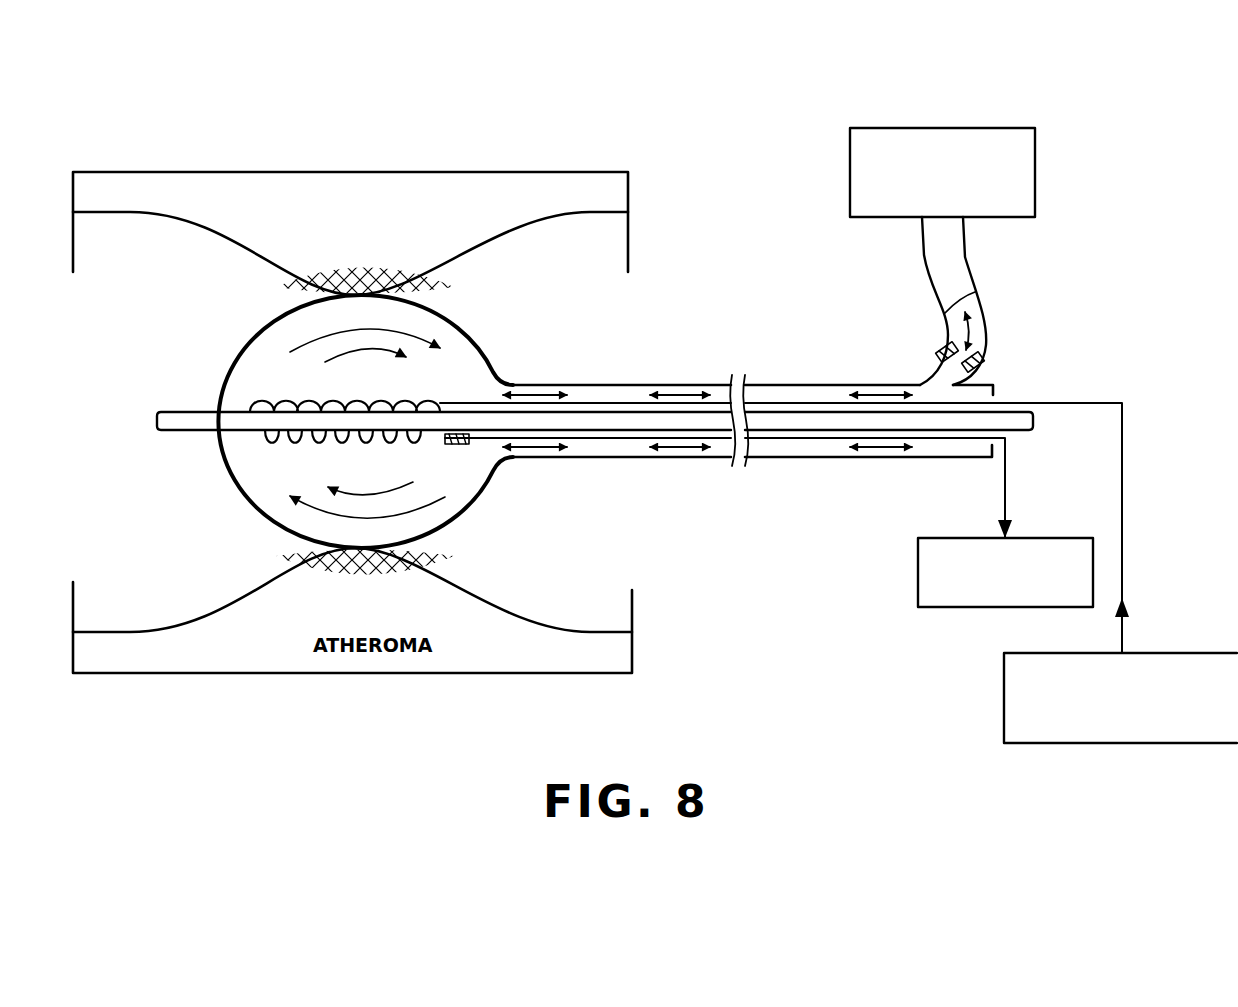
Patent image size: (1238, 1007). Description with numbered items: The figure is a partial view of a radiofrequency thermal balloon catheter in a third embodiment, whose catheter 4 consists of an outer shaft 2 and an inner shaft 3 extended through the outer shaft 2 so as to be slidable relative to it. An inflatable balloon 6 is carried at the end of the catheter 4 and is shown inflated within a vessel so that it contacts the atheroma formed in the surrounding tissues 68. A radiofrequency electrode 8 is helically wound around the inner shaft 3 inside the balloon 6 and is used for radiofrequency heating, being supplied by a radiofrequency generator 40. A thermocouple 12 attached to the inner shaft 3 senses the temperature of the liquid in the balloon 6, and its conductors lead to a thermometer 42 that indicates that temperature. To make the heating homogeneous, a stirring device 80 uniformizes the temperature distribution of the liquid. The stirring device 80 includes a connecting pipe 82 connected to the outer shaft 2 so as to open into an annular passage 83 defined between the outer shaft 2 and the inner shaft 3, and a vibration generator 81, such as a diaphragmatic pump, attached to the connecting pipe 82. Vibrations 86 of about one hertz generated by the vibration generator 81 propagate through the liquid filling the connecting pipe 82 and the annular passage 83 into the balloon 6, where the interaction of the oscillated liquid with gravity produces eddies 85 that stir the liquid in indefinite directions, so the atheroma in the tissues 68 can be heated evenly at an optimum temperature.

The outer shaft 2 is at (768, 460).
The inner shaft 3 is at (810, 420).
The catheter 4 is at (784, 487).
The balloon 6 is at (225, 465).
The radiofrequency electrode 8 is at (341, 440).
The thermocouple 12 is at (467, 446).
The radiofrequency generator 40 is at (1003, 704).
The thermometer 42 is at (950, 609).
The tissues 68 is at (305, 278).
The stirring device 80 is at (824, 328).
The vibration generator 81 is at (946, 126).
The connecting pipe 82 is at (925, 270).
The annular passage 83 is at (594, 393).
The eddies 85 is at (316, 337).
The vibrations 86 is at (681, 394).